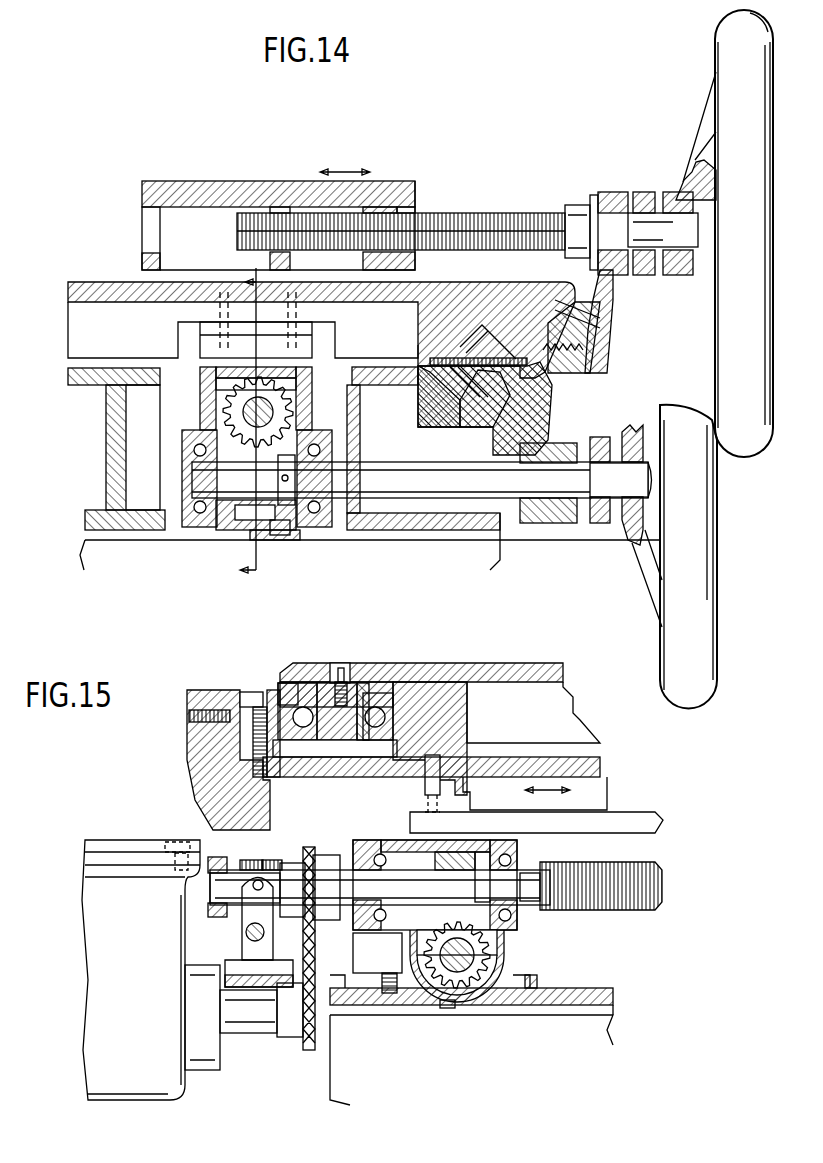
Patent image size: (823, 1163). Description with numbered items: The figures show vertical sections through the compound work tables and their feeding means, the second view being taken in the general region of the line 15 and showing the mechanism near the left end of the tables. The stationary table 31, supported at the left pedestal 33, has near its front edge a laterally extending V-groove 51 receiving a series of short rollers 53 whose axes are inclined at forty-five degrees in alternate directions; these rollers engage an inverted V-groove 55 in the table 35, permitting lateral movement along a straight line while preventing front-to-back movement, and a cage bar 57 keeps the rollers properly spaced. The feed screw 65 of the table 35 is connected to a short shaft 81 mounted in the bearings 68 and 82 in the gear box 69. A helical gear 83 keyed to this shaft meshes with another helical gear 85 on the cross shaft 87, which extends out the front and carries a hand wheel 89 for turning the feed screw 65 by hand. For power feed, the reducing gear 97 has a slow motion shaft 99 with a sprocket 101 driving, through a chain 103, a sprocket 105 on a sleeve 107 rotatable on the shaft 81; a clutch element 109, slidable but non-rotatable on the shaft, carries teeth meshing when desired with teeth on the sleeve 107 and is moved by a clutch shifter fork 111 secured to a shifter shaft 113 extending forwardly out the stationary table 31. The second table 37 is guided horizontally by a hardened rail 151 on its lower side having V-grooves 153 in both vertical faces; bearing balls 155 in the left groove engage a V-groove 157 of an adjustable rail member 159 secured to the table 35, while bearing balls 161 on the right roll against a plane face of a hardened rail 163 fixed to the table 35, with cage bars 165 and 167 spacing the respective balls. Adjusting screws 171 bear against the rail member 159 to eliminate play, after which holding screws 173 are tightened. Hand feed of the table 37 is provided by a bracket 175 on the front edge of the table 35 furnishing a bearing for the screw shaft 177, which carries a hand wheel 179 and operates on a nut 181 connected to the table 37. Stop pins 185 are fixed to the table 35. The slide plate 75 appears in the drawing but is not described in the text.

In FIG. 14, the section line 15— 15 is at (253, 420).
In FIG. 14, the stationary table 31 is at (540, 415).
In FIG. 15, the stationary table 31 is at (615, 996).
In FIG. 15, the left pedestal 33 is at (613, 1040).
In FIG. 14, the table 35 is at (595, 335).
In FIG. 15, the table 35 is at (600, 769).
In FIG. 14, the second table 37 is at (175, 181).
In FIG. 15, the second table 37 is at (520, 663).
In FIG. 14, the V-groove 51 is at (425, 395).
In FIG. 14, the rollers 53 is at (430, 420).
In FIG. 14, the inverted V-groove 55 is at (448, 352).
In FIG. 14, the cage bar 57 is at (478, 400).
In FIG. 15, the feed screw 65 is at (635, 912).
In FIG. 15, the bearing 68 is at (515, 858).
In FIG. 15, the gear box 69 is at (508, 948).
In FIG. 14, the slide plate 75 is at (205, 355).
In FIG. 15, the slide plate 75 is at (635, 824).
In FIG. 14, the short shaft 81 is at (272, 412).
In FIG. 15, the short shaft 81 is at (402, 894).
In FIG. 15, the bearing 82 is at (395, 840).
In FIG. 14, the helical gear 83 is at (225, 400).
In FIG. 15, the helical gear 83 is at (455, 848).
In FIG. 14, the helical gear 85 is at (265, 522).
In FIG. 15, the helical gear 85 is at (452, 985).
In FIG. 14, the cross shaft 87 is at (375, 470).
In FIG. 15, the cross shaft 87 is at (475, 958).
In FIG. 14, the hand wheel 89 is at (712, 627).
In FIG. 15, the reducing gear 97 is at (80, 1010).
In FIG. 15, the slow motion shaft 99 is at (262, 1035).
In FIG. 15, the sprocket 101 is at (305, 1042).
In FIG. 15, the chain 103 is at (330, 950).
In FIG. 15, the sprocket 105 is at (322, 855).
In FIG. 15, the sleeve 107 is at (290, 863).
In FIG. 15, the clutch element 109 is at (248, 858).
In FIG. 15, the clutch shifter fork 111 is at (245, 912).
In FIG. 15, the shifter shaft 113 is at (246, 934).
In FIG. 15, the hardened rail 151 is at (365, 683).
In FIG. 15, the V-grooves 153 is at (352, 665).
In FIG. 15, the bearing balls 155 is at (335, 720).
In FIG. 15, the V-groove 157 is at (285, 698).
In FIG. 15, the rail member 159 is at (298, 728).
In FIG. 15, the bearing balls 161 is at (375, 728).
In FIG. 15, the hardened rail 163 is at (432, 710).
In FIG. 15, the cage bar 165 is at (338, 668).
In FIG. 15, the cage bar 167 is at (383, 693).
In FIG. 15, the adjusting screws 171 is at (190, 716).
In FIG. 15, the holding screws 173 is at (248, 690).
In FIG. 14, the bracket 175 is at (612, 305).
In FIG. 14, the screw shaft 177 is at (645, 222).
In FIG. 14, the hand wheel 179 is at (768, 118).
In FIG. 14, the nut 181 is at (378, 207).
In FIG. 15, the stop pins 185 is at (295, 683).